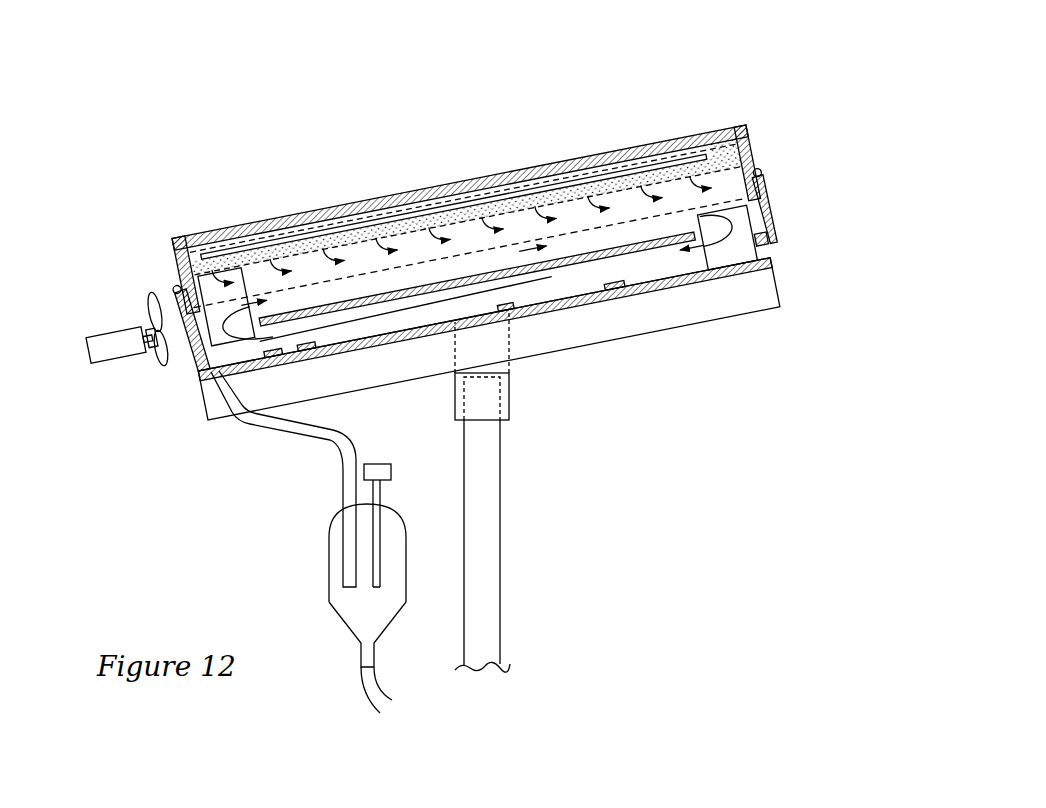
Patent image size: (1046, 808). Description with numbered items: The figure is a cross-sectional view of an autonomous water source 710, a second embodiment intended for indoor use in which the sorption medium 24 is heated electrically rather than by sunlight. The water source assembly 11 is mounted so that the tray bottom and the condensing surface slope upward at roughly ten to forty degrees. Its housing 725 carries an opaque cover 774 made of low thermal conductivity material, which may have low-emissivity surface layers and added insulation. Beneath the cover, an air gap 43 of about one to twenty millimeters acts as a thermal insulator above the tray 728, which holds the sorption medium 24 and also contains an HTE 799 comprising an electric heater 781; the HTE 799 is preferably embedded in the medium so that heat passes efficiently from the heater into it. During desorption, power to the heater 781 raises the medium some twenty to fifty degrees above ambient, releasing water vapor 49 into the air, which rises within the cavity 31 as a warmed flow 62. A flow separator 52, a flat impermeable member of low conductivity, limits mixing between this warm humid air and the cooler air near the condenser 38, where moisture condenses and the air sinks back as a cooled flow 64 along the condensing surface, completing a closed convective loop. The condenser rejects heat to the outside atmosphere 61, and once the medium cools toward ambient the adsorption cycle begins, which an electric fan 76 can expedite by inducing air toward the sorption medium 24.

The autonomous water source 710 is at (529, 195).
The water source assembly 11 is at (290, 208).
The cover 774 is at (252, 224).
The tray 728 is at (366, 217).
The sorption medium 24 is at (393, 212).
The electric heater 781 is at (473, 205).
The warmed flow 62 is at (527, 247).
The air gap 43 is at (625, 240).
The flow separator 52 is at (655, 163).
The HTE 799 is at (745, 127).
The housing 725 is at (752, 158).
The water vapor 49 is at (202, 266).
The electric fan 76 is at (105, 325).
The outside atmosphere 61 is at (139, 486).
The cavity 31 is at (323, 270).
The cooled flow 64 is at (512, 283).
The condenser 38 is at (607, 302).